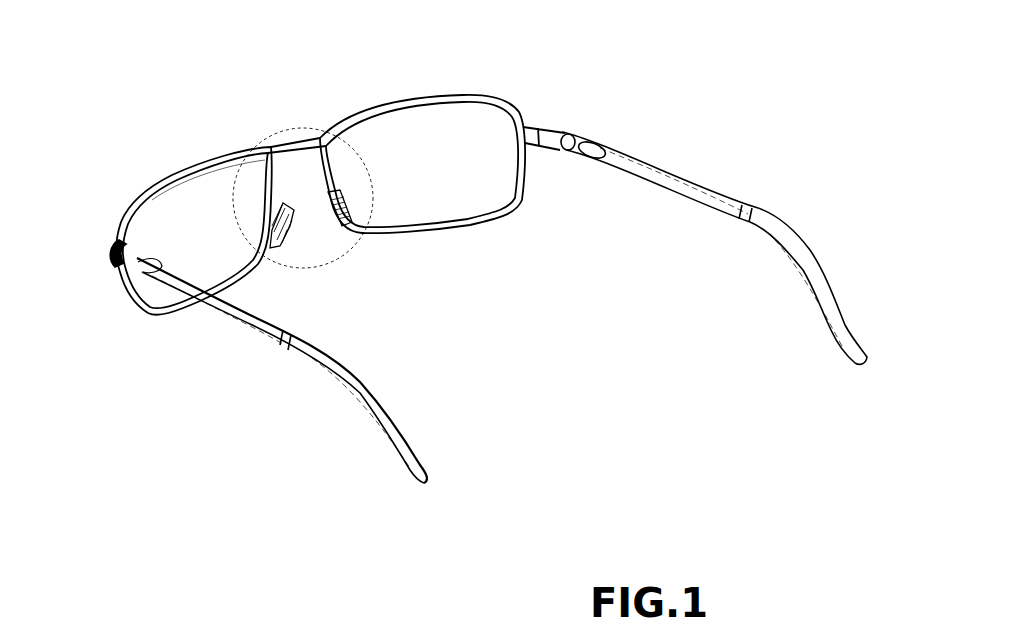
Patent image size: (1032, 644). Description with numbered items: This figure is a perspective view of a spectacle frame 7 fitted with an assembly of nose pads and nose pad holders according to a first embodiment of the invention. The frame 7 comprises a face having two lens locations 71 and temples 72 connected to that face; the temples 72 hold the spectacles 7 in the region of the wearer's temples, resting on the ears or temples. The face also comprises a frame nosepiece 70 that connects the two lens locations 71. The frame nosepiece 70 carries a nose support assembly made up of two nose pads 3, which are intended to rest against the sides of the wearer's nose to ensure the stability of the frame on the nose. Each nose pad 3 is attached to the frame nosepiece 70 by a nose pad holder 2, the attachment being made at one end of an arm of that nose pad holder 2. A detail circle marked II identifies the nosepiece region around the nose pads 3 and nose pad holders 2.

The spectacle frame 7 is at (453, 253).
The lens location 71 is at (162, 172).
The temple 72 is at (755, 207).
The frame nosepiece 70 is at (300, 130).
The nose pad holder 2 is at (292, 184).
The nose pad 3 is at (283, 247).
The section view II is at (377, 195).